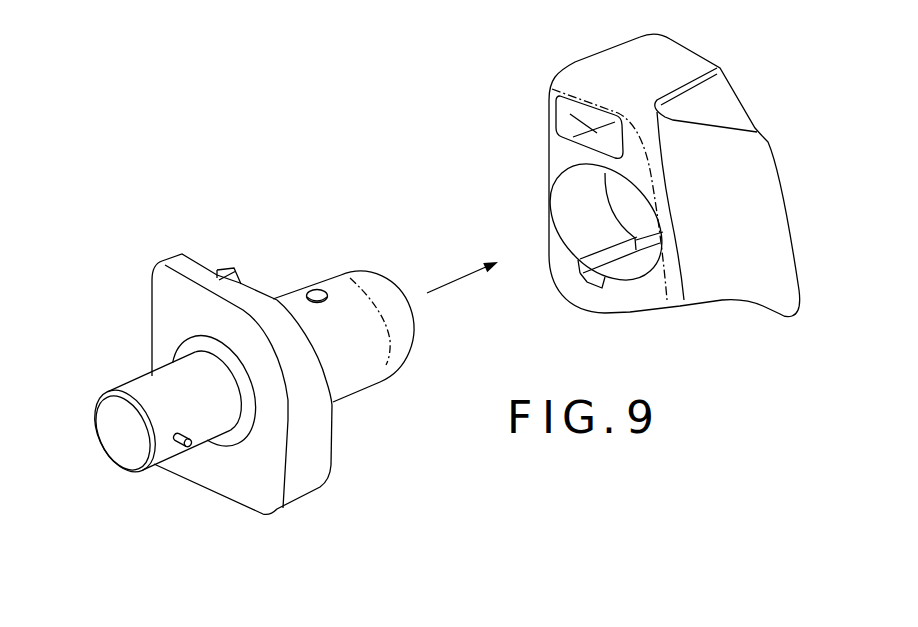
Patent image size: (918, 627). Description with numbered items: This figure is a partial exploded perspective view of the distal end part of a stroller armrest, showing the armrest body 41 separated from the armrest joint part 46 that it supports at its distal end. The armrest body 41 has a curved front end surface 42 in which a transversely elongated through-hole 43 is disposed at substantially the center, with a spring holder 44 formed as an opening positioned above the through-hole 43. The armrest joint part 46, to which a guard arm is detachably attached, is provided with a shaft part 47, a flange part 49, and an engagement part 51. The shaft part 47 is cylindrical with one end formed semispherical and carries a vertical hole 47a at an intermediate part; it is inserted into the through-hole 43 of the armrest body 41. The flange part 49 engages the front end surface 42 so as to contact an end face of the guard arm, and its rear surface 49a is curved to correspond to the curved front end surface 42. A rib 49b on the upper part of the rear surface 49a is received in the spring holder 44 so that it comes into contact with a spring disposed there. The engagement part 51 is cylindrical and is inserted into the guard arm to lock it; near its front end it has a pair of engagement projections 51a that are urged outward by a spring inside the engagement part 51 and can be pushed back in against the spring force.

The armrest body 41 is at (610, 48).
The front end surface 42 is at (560, 167).
The through-hole 43 is at (573, 228).
The spring holder 44 is at (574, 112).
The armrest joint part 46 is at (160, 252).
The shaft part 47 is at (294, 296).
The vertical hole 47a is at (320, 290).
The flange part 49 is at (302, 478).
The rear surface 49a is at (322, 430).
The rib 49b is at (228, 268).
The engagement part 51 is at (150, 383).
The engagement projections 51a is at (193, 449).